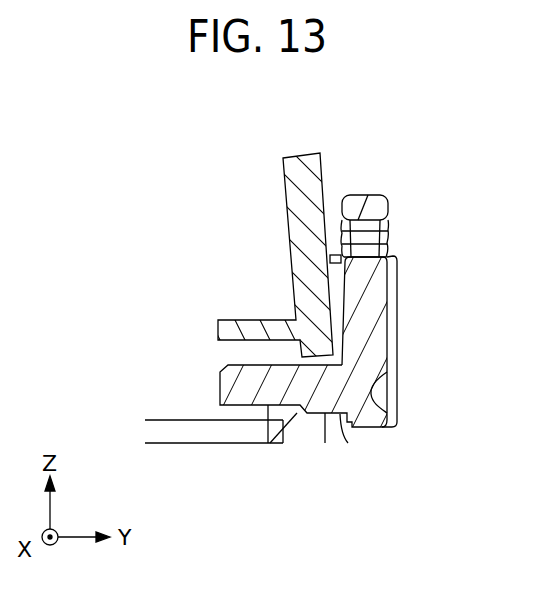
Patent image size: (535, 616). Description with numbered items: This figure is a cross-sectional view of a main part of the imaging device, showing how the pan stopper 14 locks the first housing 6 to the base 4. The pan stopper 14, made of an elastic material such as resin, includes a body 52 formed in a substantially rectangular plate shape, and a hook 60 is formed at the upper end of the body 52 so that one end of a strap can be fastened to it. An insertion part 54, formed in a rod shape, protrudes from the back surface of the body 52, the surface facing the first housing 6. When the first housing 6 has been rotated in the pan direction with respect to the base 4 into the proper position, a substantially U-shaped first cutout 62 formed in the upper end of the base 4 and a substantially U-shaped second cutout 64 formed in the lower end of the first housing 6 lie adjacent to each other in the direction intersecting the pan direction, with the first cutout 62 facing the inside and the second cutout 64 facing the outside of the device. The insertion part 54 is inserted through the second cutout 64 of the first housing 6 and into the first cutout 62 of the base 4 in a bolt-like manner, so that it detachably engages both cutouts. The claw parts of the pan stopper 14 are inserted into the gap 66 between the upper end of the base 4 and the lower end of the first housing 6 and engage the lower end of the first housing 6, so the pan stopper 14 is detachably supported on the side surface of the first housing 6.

The base 4 is at (344, 430).
The first housing 6 is at (320, 174).
The pan stopper 14 is at (389, 196).
The body 52 is at (372, 313).
The insertion part 54 is at (233, 384).
The hook 60 is at (389, 206).
The first cutout 62 is at (287, 405).
The second cutout 64 is at (310, 370).
The gap 66 is at (305, 413).